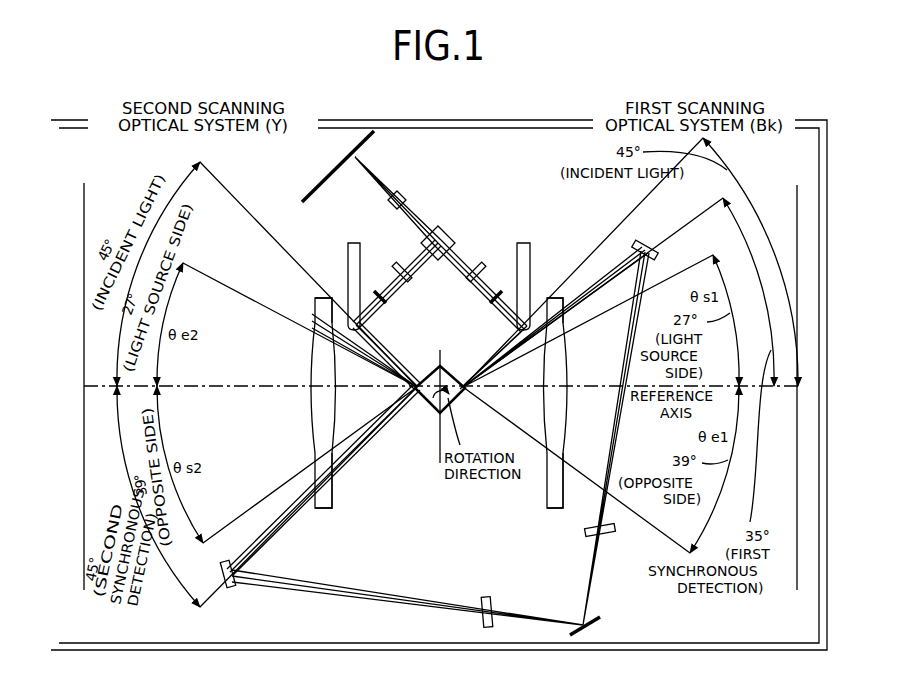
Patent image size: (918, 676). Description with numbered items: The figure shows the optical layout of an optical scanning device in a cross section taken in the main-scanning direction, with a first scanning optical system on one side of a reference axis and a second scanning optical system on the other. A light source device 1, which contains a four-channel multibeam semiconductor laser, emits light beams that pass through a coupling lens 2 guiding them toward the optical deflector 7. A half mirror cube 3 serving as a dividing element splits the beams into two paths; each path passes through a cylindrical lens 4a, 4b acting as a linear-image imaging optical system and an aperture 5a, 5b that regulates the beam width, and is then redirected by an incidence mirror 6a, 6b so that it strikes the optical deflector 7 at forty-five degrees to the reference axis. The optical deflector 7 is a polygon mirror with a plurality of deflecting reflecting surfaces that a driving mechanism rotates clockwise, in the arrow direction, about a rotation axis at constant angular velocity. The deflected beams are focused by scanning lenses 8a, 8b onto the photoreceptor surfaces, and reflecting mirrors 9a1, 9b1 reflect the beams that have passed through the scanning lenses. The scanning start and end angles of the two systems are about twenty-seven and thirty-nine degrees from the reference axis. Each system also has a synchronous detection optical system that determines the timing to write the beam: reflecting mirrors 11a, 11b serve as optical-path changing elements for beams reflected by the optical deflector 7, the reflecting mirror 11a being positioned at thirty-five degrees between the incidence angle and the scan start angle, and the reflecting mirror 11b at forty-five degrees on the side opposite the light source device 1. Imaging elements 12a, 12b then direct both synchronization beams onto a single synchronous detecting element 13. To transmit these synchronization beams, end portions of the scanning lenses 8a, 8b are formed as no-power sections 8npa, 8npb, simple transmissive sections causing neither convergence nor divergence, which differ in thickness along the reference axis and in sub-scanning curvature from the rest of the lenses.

The light source device 1 is at (330, 172).
The coupling lens 2 is at (404, 195).
The half mirror cube 3 is at (450, 235).
The cylindrical lens 4a is at (480, 266).
The cylindrical lens 4b is at (400, 266).
The aperture 5a is at (492, 299).
The aperture 5b is at (388, 299).
The incidence mirror 6a is at (522, 242).
The incidence mirror 6b is at (347, 250).
The optical deflector 7 is at (430, 405).
The scanning lens 8a is at (566, 350).
The scanning lens 8b is at (313, 352).
The no-power section 8npa is at (318, 302).
The no-power section 8npb is at (327, 508).
The reflecting mirror 9a1 is at (796, 188).
The reflecting mirror 9b1 is at (86, 186).
The reflecting mirror 11a is at (647, 243).
The reflecting mirror 11b is at (231, 587).
The imaging element 12a is at (606, 535).
The imaging element 12b is at (488, 597).
The synchronous detecting element 13 is at (598, 622).